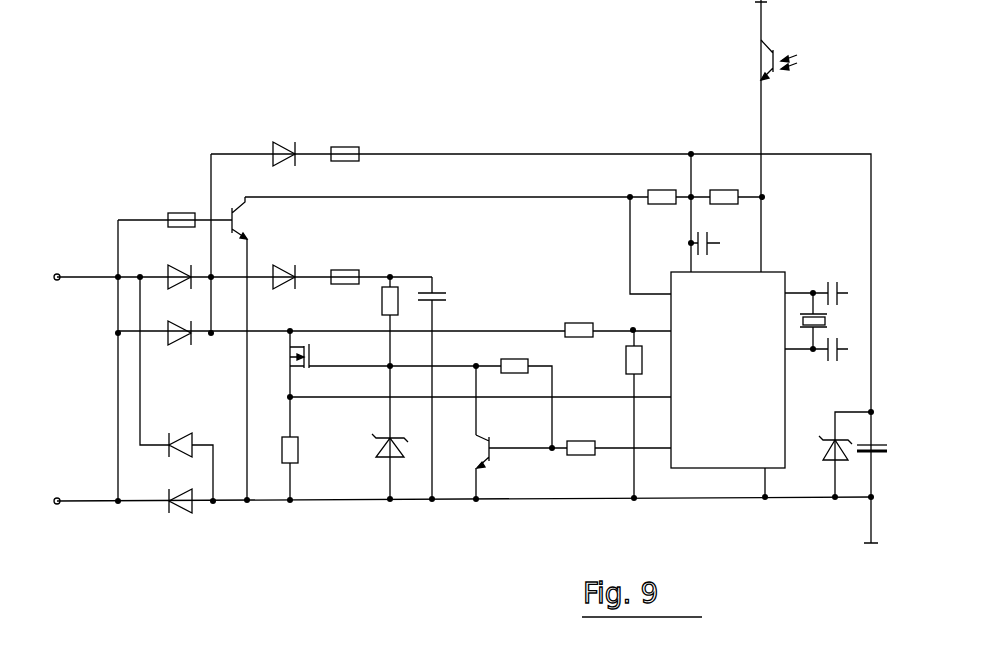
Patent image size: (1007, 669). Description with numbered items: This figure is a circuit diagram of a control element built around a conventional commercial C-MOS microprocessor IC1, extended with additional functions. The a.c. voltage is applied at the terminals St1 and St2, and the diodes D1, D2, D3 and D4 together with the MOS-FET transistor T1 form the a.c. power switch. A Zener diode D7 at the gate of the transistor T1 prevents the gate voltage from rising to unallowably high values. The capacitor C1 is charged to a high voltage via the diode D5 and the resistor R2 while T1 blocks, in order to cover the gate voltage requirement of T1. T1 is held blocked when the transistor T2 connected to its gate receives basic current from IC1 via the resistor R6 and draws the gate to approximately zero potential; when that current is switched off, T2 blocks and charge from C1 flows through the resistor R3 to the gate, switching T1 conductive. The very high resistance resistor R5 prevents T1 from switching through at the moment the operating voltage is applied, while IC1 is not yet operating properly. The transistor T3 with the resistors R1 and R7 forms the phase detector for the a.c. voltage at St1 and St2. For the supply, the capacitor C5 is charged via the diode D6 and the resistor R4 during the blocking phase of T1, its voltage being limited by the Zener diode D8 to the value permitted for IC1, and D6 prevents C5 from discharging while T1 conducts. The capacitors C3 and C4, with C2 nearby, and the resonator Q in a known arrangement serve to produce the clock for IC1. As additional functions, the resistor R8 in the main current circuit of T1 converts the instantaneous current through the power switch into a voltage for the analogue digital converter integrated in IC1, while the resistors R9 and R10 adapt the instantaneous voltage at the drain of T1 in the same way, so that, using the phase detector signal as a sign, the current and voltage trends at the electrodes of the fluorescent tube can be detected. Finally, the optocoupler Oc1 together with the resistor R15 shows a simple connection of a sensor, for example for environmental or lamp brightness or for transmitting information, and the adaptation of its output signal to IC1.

The resistor R1 is at (181, 210).
The resistor R2 is at (344, 265).
The resistor R3 is at (373, 303).
The resistor R4 is at (344, 143).
The resistor R5 is at (514, 355).
The resistor R6 is at (580, 436).
The resistor R7 is at (662, 185).
The resistor R8 is at (303, 442).
The resistor R9 is at (579, 317).
The resistor R10 is at (616, 361).
The resistor R15 is at (723, 185).
The diode D1 is at (180, 266).
The diode D2 is at (180, 322).
The diode D3 is at (181, 434).
The diode D4 is at (181, 490).
The diode D5 is at (284, 266).
The diode D6 is at (284, 143).
The Zener diode D7 is at (377, 447).
The Zener diode D8 is at (829, 461).
The capacitor C1 is at (439, 287).
The capacitor C2 is at (712, 236).
The capacitor C3 is at (832, 283).
The capacitor C4 is at (835, 340).
The capacitor C5 is at (880, 433).
The MOS-FET transistor T1 is at (285, 356).
The transistor T2 is at (504, 451).
The transistor T3 is at (252, 218).
The optocoupler Oc1 is at (757, 60).
The microprocessor IC1 is at (728, 370).
The resonator Q is at (809, 331).
The terminal St1 is at (64, 260).
The terminal St2 is at (65, 528).